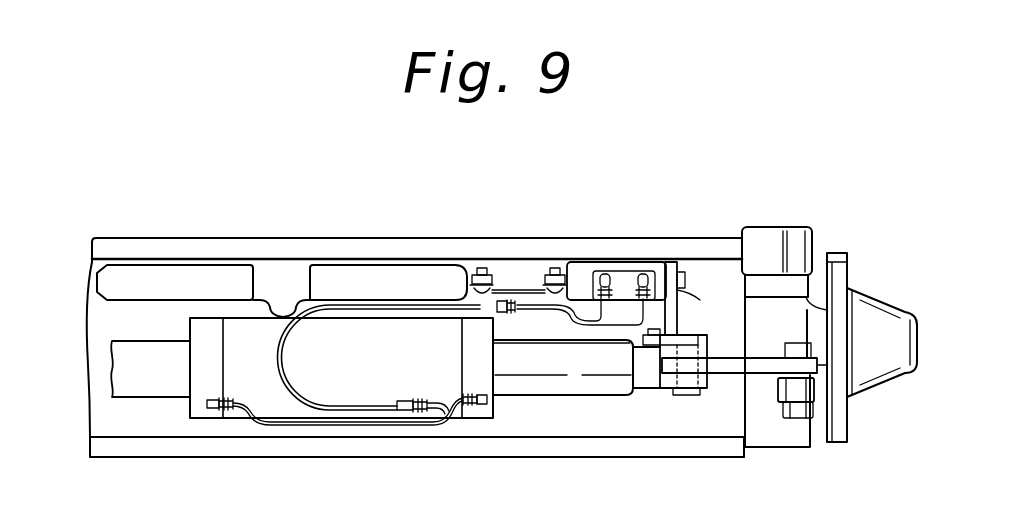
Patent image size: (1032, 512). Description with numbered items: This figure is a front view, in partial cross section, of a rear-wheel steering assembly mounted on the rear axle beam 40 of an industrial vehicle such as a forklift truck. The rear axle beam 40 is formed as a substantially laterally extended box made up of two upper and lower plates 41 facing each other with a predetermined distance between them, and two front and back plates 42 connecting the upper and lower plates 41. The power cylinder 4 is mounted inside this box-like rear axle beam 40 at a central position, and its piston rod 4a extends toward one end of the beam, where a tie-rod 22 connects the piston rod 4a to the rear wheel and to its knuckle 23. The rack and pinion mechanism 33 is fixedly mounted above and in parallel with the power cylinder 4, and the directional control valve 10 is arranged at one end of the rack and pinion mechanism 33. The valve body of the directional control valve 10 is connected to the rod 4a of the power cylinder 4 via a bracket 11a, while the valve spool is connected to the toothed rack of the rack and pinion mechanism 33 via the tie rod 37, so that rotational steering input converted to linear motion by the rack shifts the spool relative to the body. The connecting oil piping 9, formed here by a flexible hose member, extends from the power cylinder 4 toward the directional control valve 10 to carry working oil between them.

The rear axle beam 40 is at (140, 237).
The upper and lower plates 41 is at (203, 254).
The rack and pinion mechanism 33 is at (287, 296).
The connecting oil piping 9 is at (410, 303).
The tie rod 37 is at (515, 283).
The directional control valve 10 is at (580, 268).
The bracket 11a is at (684, 298).
The power cylinder 4 is at (270, 400).
The piston rod 4a is at (550, 383).
The front and back plates 42 is at (630, 423).
The tie-rod 22 is at (722, 368).
The knuckle 23 is at (768, 392).